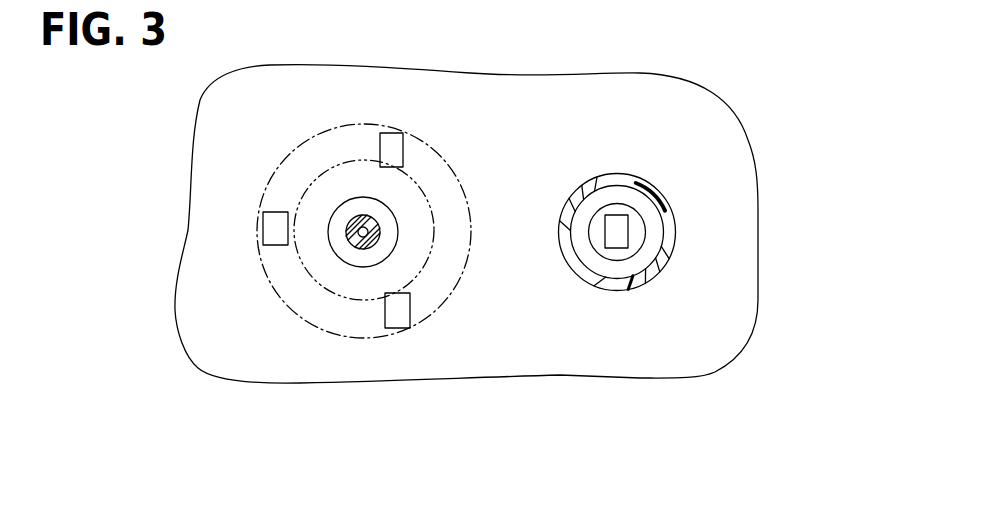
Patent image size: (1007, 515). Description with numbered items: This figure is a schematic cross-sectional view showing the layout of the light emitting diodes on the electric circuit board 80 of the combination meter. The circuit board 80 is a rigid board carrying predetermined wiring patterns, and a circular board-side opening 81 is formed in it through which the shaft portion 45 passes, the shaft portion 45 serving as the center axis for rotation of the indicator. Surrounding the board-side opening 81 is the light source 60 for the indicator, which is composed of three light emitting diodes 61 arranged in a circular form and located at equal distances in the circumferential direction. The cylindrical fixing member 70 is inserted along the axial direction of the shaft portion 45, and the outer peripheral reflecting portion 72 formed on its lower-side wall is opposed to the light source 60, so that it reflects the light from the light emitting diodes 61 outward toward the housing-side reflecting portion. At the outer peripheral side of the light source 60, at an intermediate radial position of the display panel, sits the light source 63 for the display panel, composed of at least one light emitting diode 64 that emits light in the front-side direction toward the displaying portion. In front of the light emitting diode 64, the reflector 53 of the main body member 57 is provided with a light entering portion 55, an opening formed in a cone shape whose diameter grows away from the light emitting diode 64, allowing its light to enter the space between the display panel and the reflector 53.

The shaft portion 45 is at (364, 215).
The reflector 53 is at (705, 230).
The light entering portion 55 is at (644, 238).
The main body member 57 is at (677, 227).
The light source for the indicator 60 is at (265, 208).
The light emitting diodes 61 is at (390, 148).
The light source for the display panel 63 is at (606, 140).
The light emitting diode 64 is at (615, 222).
The fixing member 70 is at (364, 273).
The outer peripheral reflecting portion 72 is at (327, 332).
The circuit board 80 is at (708, 108).
The board-side opening 81 is at (357, 231).